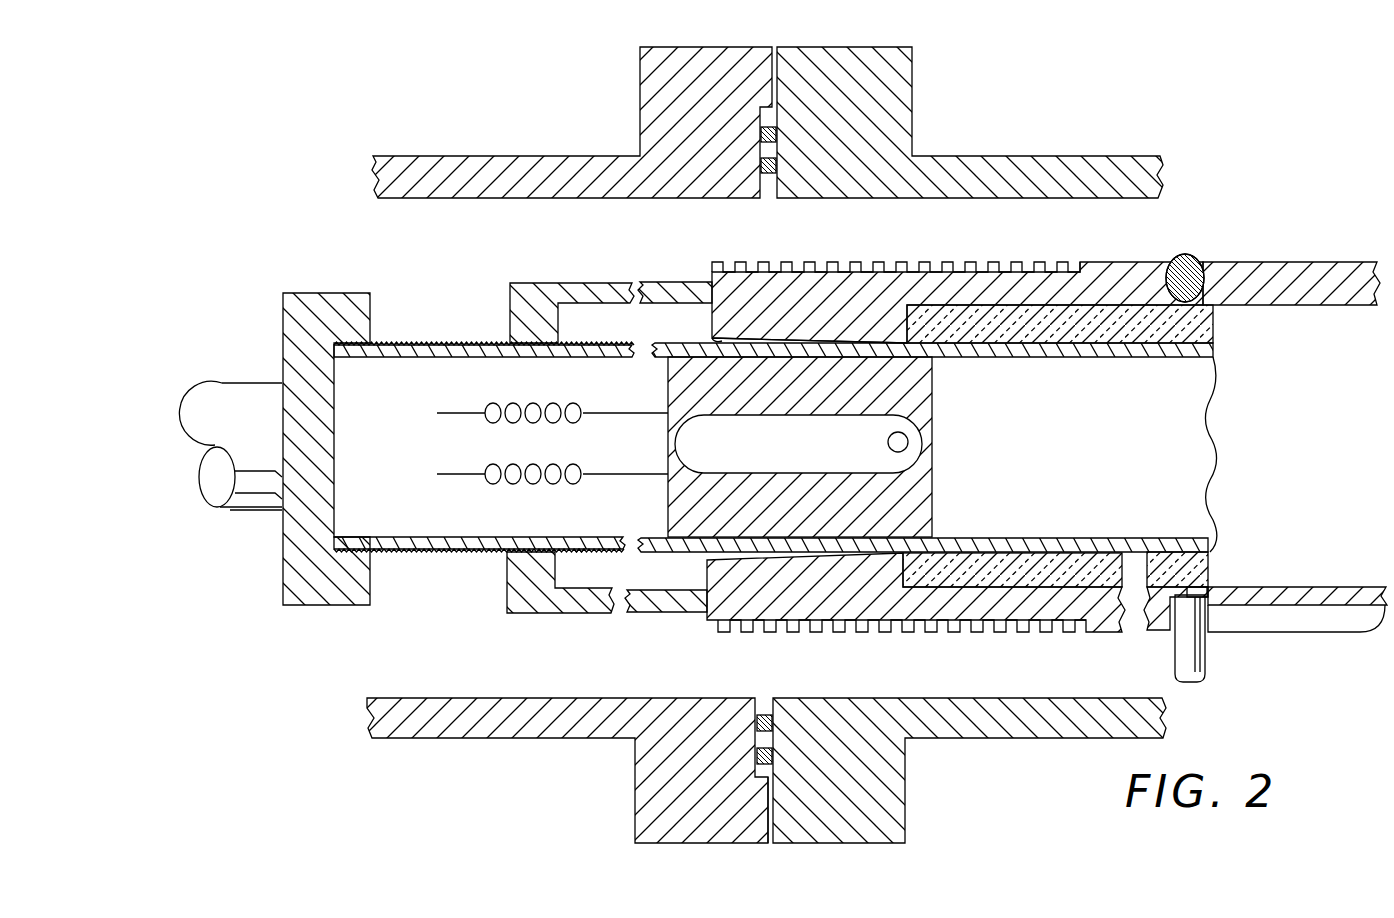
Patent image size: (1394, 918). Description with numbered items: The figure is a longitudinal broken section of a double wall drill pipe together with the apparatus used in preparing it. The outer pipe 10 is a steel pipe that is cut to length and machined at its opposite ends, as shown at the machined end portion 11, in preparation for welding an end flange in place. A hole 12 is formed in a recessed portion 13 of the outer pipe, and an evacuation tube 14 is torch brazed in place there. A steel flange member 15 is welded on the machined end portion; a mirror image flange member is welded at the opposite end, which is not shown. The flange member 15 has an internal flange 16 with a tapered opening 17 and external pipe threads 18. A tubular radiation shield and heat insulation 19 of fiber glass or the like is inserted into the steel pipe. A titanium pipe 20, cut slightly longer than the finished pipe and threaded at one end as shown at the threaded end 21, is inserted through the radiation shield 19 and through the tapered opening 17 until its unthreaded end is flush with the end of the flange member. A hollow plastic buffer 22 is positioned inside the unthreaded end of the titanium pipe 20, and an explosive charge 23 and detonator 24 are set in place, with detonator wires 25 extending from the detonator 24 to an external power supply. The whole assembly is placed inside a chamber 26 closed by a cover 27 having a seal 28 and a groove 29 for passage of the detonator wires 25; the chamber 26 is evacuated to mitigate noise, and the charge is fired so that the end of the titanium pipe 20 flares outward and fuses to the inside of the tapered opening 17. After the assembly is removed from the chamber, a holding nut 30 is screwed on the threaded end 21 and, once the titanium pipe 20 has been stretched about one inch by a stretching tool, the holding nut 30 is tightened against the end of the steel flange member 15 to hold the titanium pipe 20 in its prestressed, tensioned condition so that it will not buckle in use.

The outer pipe 10 is at (1322, 263).
The machined end portion 11 is at (1198, 257).
The hole 12 is at (1187, 592).
The recessed portion 13 is at (1305, 607).
The evacuation tube 14 is at (1195, 642).
The flange member 15 is at (1093, 262).
The internal flange 16 is at (908, 322).
The tapered opening 17 is at (712, 338).
The external pipe threads 18 is at (875, 262).
The radiation shield and heat insulation 19 is at (1095, 327).
The titanium pipe 20 is at (1103, 552).
The threaded end 21 is at (450, 342).
The hollow plastic buffer 22 is at (918, 489).
The explosive charge 23 is at (682, 442).
The detonator 24 is at (908, 441).
The detonator wires 25 is at (492, 462).
The chamber 26 is at (897, 755).
The cover 27 is at (615, 728).
The seal 28 is at (765, 715).
The groove 29 is at (768, 827).
The holding nut 30 is at (520, 290).